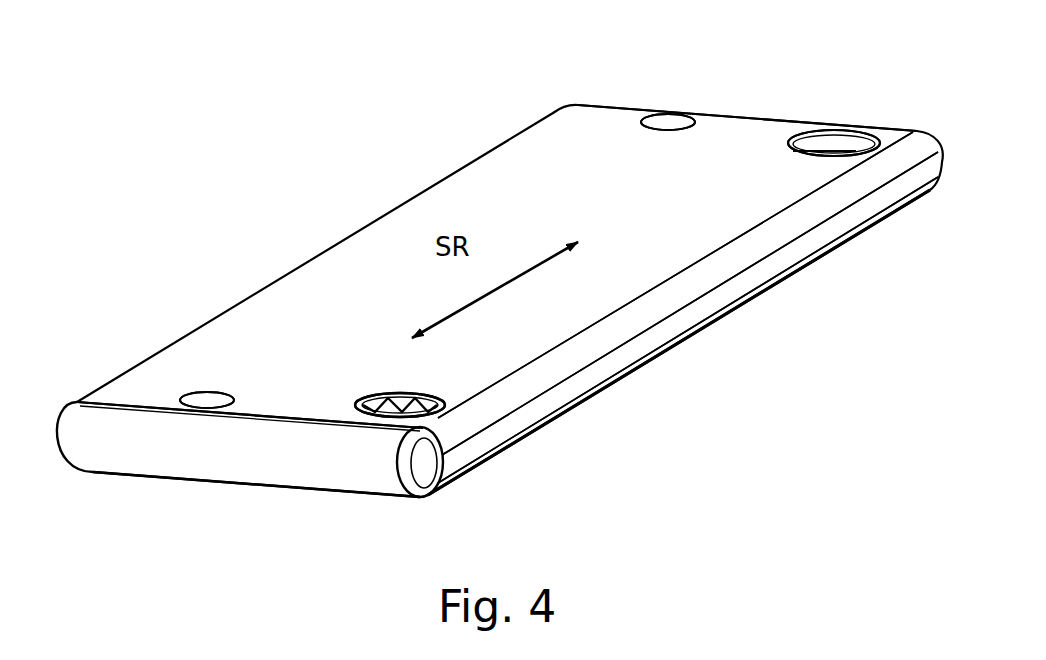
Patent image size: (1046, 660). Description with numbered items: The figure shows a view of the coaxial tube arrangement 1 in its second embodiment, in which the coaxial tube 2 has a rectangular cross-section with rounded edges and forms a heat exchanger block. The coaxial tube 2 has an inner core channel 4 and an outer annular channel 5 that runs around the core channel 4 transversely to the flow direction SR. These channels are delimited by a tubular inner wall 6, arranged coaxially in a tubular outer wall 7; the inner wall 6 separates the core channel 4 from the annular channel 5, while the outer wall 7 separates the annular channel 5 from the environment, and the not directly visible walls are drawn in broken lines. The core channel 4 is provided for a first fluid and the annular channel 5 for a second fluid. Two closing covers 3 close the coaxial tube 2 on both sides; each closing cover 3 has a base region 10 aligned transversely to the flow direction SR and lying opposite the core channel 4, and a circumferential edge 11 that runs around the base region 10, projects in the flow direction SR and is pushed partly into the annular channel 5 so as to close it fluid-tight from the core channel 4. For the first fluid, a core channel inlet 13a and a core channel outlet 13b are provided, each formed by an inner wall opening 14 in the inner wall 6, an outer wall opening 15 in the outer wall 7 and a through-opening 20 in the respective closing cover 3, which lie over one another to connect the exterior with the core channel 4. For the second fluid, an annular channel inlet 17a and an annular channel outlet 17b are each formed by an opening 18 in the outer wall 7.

The coaxial tube arrangement 1 is at (510, 296).
The coaxial tube 2 is at (400, 200).
The closing cover 3 is at (97, 478).
The core channel 4 is at (798, 173).
The annular channel 5 is at (750, 240).
The inner wall 6 is at (610, 283).
The outer wall 7 is at (538, 346).
The base region 10 is at (213, 447).
The circumferential edge 11 is at (323, 427).
The core channel inlet 13a is at (197, 398).
The core channel outlet 13b is at (675, 117).
The inner wall opening 14 is at (394, 207).
The outer wall opening 15 is at (210, 397).
The annular channel inlet 17a is at (833, 125).
The annular channel outlet 17b is at (441, 415).
The opening 18 is at (857, 143).
The through-opening 20 is at (394, 207).